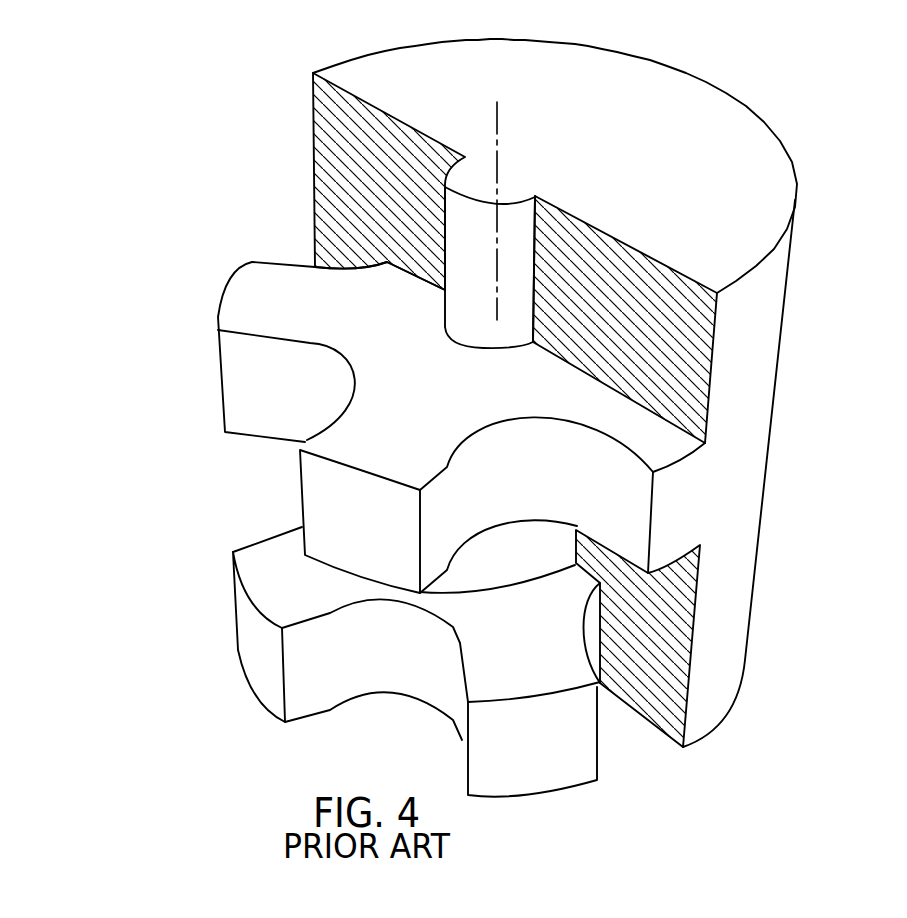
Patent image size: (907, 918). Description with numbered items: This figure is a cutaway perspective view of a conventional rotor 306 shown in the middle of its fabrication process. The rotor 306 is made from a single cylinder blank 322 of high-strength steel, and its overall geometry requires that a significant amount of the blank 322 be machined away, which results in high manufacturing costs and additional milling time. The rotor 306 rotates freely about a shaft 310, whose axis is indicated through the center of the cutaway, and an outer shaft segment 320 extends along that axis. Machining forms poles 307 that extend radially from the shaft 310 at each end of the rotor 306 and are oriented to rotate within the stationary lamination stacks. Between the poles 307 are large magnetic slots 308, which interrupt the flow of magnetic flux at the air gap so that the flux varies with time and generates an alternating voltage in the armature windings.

The rotor 306 is at (786, 442).
The poles 307 is at (233, 283).
The magnetic slots 308 is at (264, 484).
The shaft 310 is at (497, 140).
The outer shaft segment 320 is at (514, 196).
The cylinder blank 322 is at (725, 97).